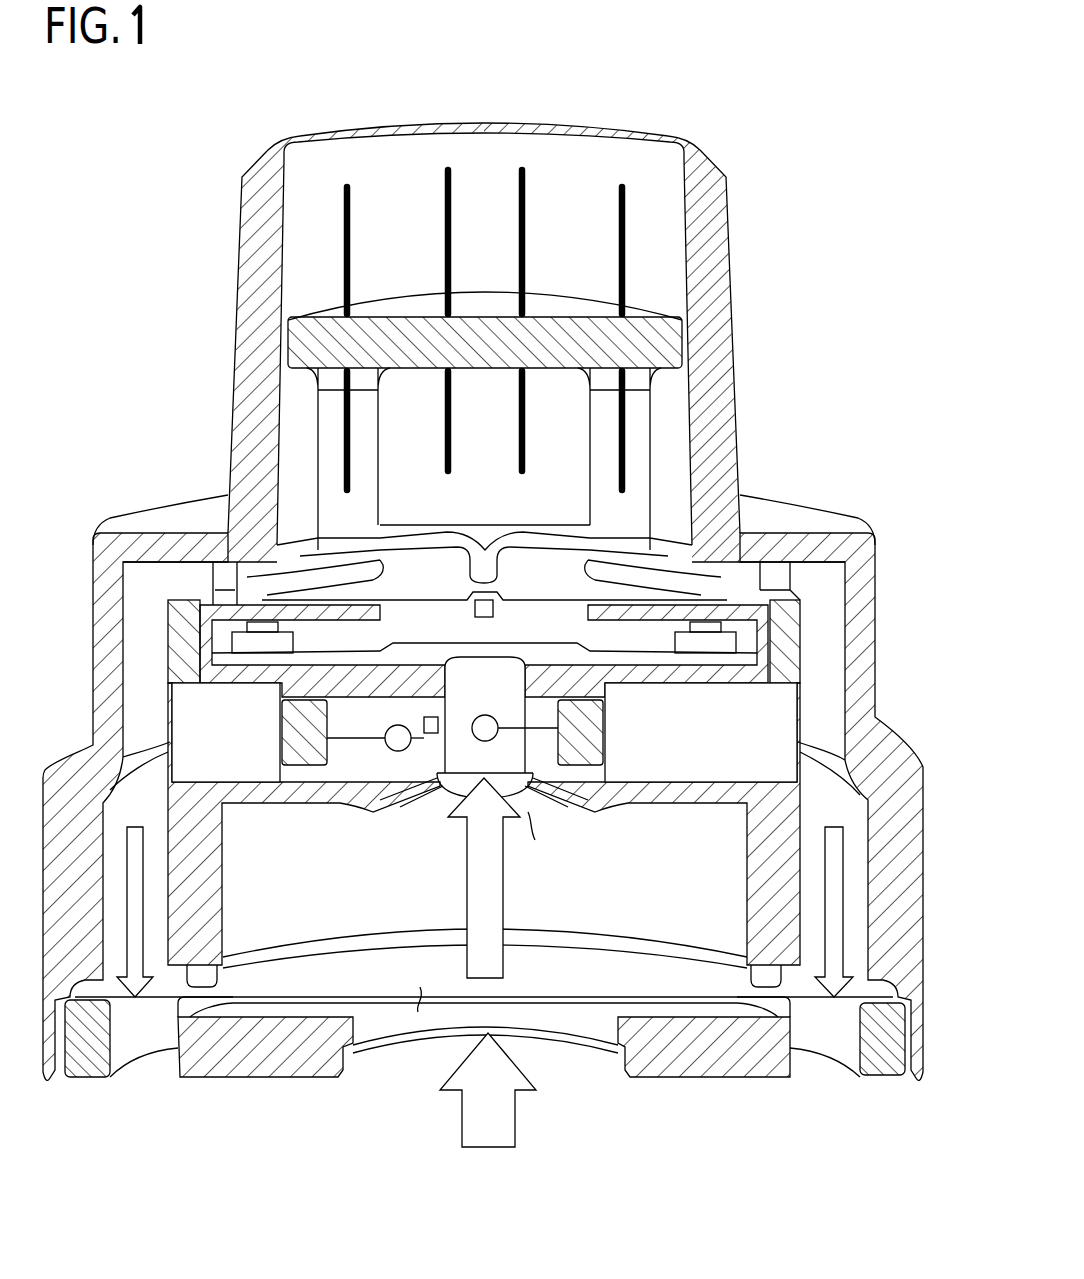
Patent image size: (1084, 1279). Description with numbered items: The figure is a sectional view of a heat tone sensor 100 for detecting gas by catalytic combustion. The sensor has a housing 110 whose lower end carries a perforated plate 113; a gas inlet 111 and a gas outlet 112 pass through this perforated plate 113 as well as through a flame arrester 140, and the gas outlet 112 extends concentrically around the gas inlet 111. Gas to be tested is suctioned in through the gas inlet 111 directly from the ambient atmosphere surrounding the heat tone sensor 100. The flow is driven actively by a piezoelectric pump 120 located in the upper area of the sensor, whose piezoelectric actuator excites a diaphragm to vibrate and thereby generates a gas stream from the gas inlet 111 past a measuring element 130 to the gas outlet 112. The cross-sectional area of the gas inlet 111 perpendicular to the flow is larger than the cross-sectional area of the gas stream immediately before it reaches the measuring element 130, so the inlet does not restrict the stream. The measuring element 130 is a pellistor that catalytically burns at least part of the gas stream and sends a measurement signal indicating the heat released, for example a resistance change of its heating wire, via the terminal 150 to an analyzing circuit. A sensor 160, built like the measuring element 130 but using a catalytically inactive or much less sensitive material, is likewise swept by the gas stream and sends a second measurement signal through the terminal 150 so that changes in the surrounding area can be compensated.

The heat tone sensor 100 is at (162, 1138).
The housing 110 is at (858, 618).
The gas inlet 111 is at (490, 1128).
The gas outlet 112 is at (135, 890).
The perforated plate 113 is at (705, 1050).
The piezoelectric pump 120 is at (568, 616).
The measuring element 130 is at (590, 742).
The flame arrester 140 is at (845, 1000).
The terminal 150 is at (518, 165).
The sensor 160 is at (300, 740).